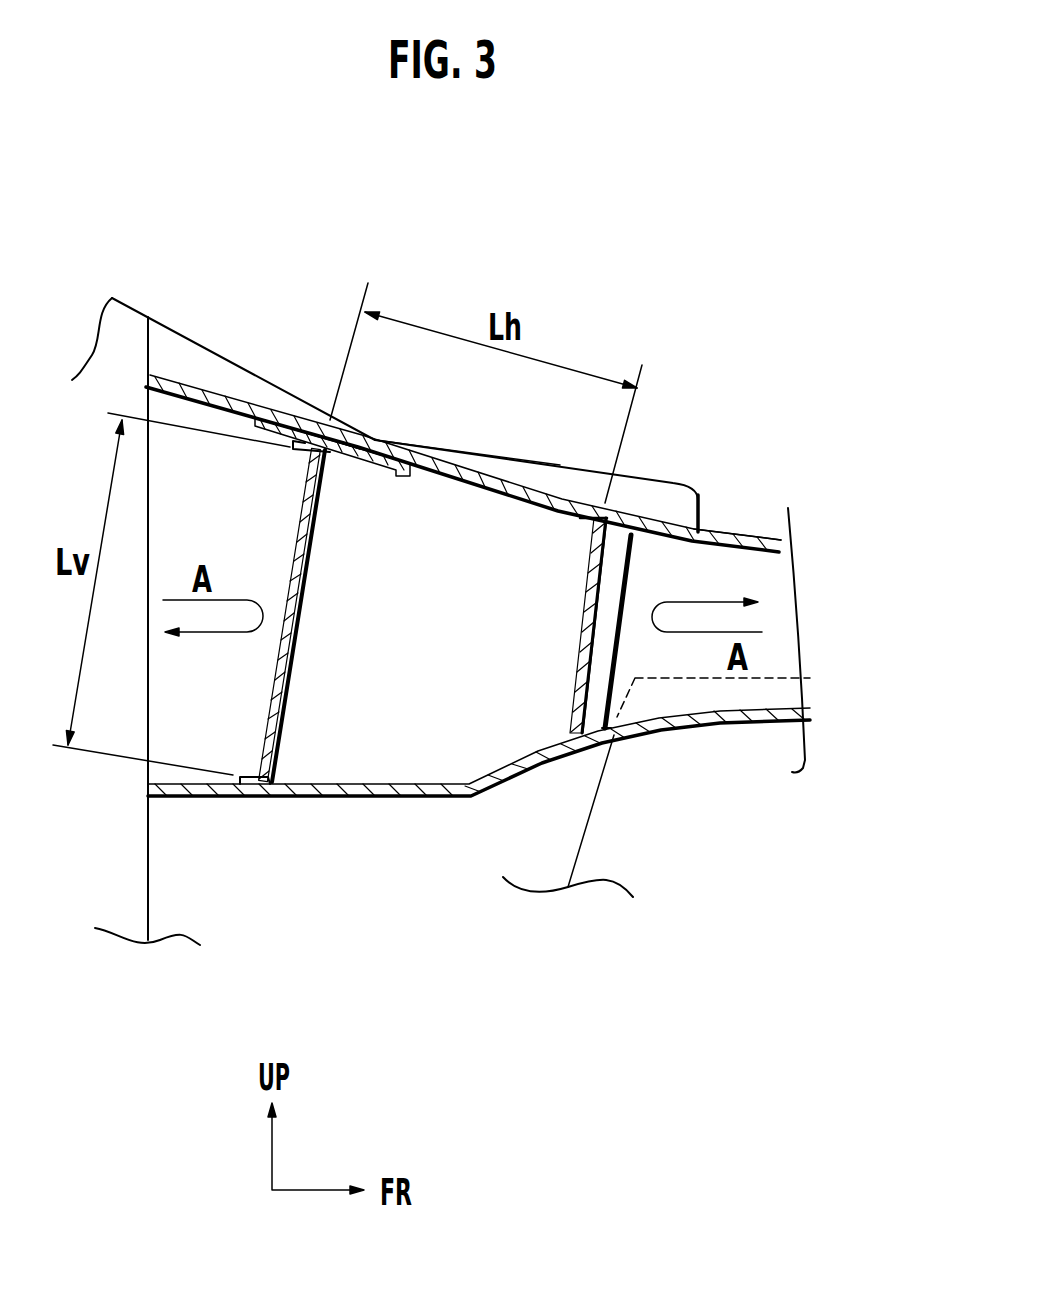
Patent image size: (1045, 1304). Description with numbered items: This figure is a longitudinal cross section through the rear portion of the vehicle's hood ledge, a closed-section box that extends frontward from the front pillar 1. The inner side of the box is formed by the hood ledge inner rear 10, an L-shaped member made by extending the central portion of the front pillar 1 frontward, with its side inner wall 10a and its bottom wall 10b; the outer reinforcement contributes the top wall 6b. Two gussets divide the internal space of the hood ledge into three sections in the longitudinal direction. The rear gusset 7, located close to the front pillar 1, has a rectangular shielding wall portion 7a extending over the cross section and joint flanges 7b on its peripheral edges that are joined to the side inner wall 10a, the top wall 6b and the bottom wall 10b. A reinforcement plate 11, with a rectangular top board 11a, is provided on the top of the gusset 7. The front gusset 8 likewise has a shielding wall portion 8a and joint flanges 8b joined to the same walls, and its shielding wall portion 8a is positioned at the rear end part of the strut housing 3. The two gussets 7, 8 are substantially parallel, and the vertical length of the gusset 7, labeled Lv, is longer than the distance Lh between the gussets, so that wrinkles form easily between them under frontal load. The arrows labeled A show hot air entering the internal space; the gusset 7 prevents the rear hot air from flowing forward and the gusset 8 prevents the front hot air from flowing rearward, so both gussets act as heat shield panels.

The front pillar 1 is at (137, 299).
The strut housing 3 is at (566, 831).
The top wall 6b is at (742, 535).
The rear gusset 7 is at (298, 612).
The shielding wall portion 7a is at (293, 670).
The joint flange 7b is at (307, 447).
The front gusset 8 is at (599, 625).
The shielding wall portion 8a is at (575, 682).
The joint flange 8b is at (582, 521).
The hood ledge inner rear 10 is at (455, 435).
The side inner wall 10a is at (517, 468).
The bottom wall 10b is at (346, 798).
The reinforcement plate 11 is at (342, 493).
The top board 11a is at (350, 458).